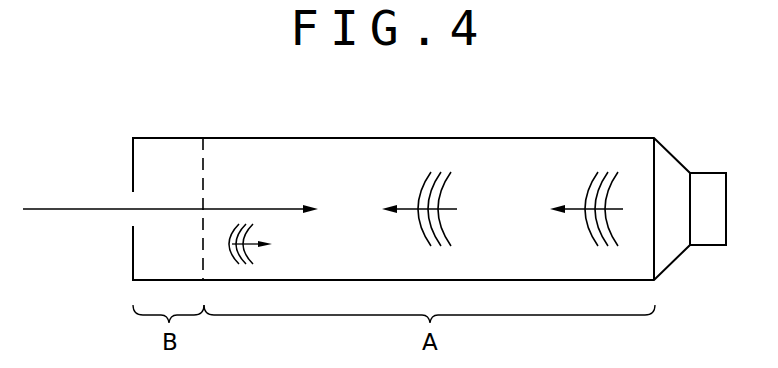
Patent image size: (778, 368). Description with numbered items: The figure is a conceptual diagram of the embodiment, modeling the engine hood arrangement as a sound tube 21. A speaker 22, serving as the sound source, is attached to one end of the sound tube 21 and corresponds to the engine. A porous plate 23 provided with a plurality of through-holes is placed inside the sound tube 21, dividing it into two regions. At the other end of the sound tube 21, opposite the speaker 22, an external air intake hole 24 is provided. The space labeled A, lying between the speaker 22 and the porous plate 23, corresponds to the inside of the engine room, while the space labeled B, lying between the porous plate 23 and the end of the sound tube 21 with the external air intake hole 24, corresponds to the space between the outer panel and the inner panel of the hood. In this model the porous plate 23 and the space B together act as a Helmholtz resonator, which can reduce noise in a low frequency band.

The sound tube 21 is at (445, 138).
The speaker 22 is at (705, 173).
The porous plate 23 is at (205, 165).
The external air intake hole 24 is at (133, 226).